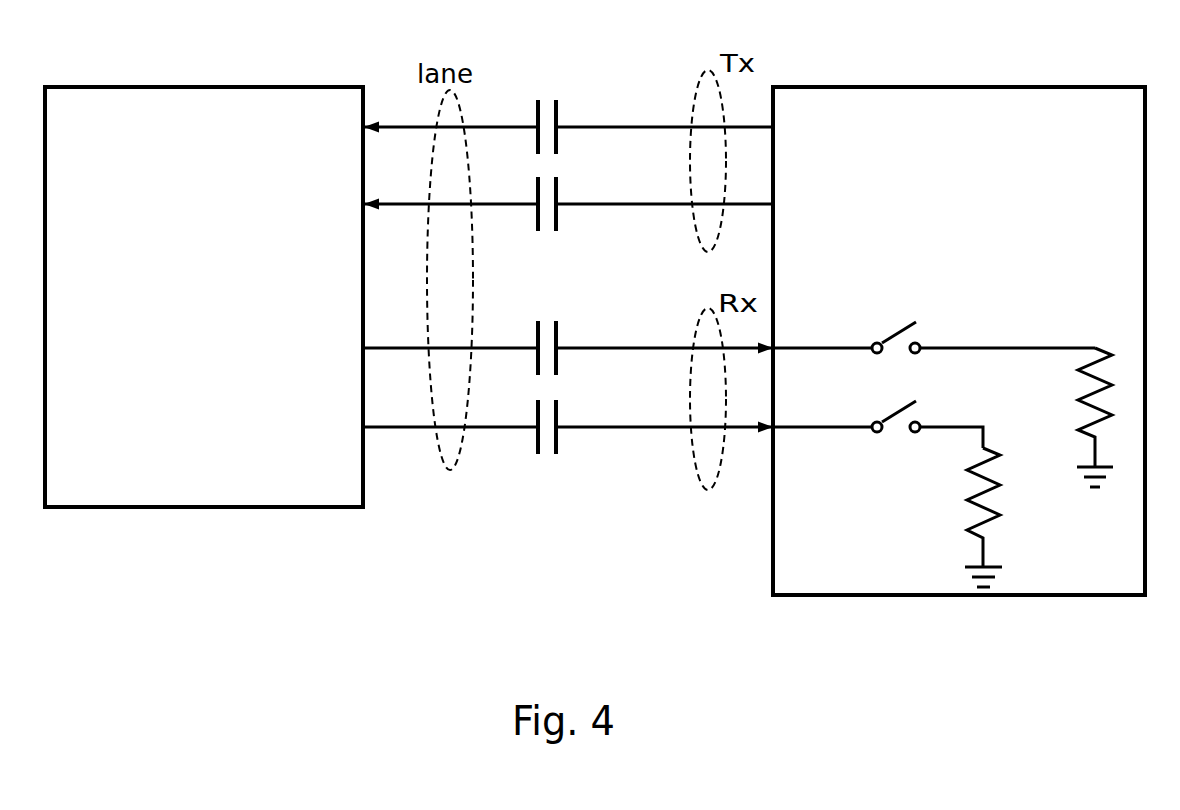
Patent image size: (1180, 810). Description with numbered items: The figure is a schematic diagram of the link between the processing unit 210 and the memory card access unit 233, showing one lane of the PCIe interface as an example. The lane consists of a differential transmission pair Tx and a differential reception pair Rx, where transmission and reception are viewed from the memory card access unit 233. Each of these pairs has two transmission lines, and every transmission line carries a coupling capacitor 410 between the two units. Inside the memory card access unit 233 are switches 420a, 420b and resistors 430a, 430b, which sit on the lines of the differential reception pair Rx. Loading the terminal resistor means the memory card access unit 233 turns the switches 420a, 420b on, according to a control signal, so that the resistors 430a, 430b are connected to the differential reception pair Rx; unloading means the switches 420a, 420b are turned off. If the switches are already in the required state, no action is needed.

The processing unit 210 is at (207, 86).
The memory card access unit 233 is at (952, 86).
The coupling capacitor 410 is at (567, 84).
The switch 420a is at (874, 404).
The switch 420b is at (874, 319).
The resistor 430a is at (967, 497).
The resistor 430b is at (1080, 430).